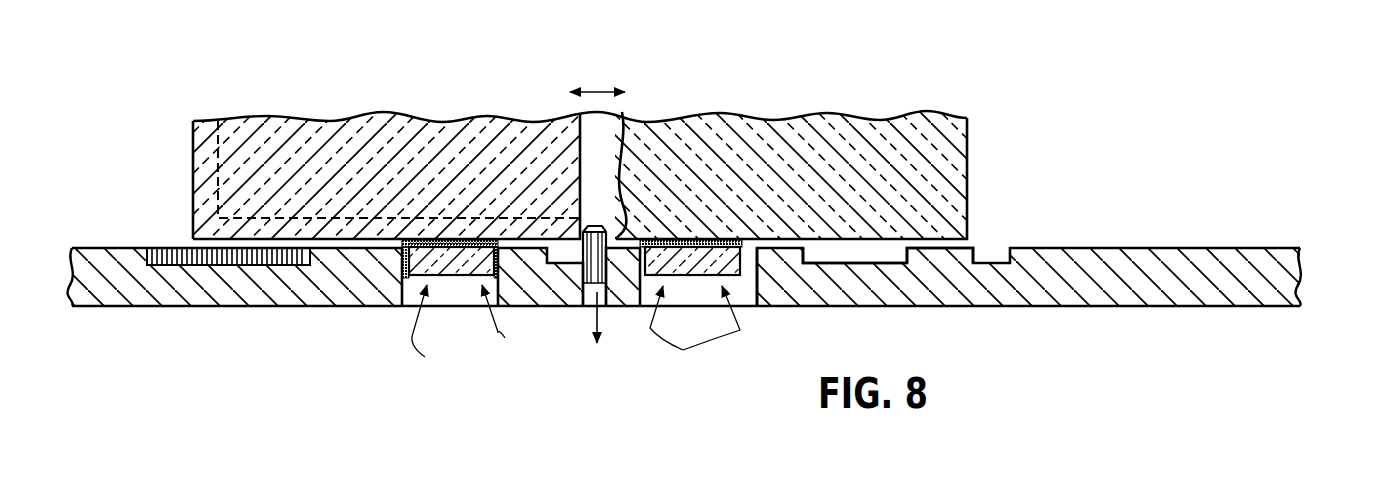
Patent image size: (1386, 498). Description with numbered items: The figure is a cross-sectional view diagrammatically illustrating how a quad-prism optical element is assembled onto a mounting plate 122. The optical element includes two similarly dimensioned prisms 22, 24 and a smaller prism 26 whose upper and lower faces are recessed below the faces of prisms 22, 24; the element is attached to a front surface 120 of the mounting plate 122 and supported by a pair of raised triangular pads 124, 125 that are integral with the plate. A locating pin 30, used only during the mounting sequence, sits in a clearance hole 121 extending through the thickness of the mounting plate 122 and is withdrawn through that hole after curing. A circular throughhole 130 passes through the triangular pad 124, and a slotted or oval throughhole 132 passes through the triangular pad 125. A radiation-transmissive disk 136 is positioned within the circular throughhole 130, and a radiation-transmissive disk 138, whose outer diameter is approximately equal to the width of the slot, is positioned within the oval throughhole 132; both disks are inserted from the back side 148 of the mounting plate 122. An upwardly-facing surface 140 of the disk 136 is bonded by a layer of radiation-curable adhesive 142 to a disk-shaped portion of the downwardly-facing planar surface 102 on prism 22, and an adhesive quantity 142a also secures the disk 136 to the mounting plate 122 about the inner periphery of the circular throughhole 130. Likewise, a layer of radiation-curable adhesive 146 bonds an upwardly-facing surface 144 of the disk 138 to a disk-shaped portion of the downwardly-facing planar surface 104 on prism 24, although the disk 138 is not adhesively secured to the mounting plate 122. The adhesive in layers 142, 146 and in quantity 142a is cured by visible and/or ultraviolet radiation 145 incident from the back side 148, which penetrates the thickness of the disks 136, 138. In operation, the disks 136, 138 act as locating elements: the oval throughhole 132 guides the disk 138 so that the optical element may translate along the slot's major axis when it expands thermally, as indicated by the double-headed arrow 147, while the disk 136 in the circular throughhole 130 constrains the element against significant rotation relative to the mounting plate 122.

The prism 22 is at (193, 135).
The prism 24 is at (780, 121).
The prism 26 is at (283, 119).
The locating pin 30 is at (583, 229).
The downwardly-facing planar surface 102 is at (223, 250).
The downwardly-facing planar surface 104 is at (929, 245).
The front surface 120 is at (1208, 248).
The clearance hole 121 is at (589, 293).
The mounting plate 122 is at (1303, 248).
The triangular pad 124 is at (343, 258).
The triangular pad 125 is at (808, 258).
The circular throughhole 130 is at (468, 297).
The oval throughhole 132 is at (748, 288).
The radiation-transmissive disk 136 is at (485, 240).
The radiation-transmissive disk 138 is at (750, 258).
The upwardly-facing surface 140 is at (449, 240).
The radiation-curable adhesive layer 142 is at (420, 240).
The adhesive quantity 142a is at (412, 280).
The upwardly-facing surface 144 is at (715, 240).
The radiation 145 is at (572, 335).
The radiation-curable adhesive layer 146 is at (692, 240).
The double-headed arrow 147 is at (594, 90).
The back side 148 is at (1203, 306).